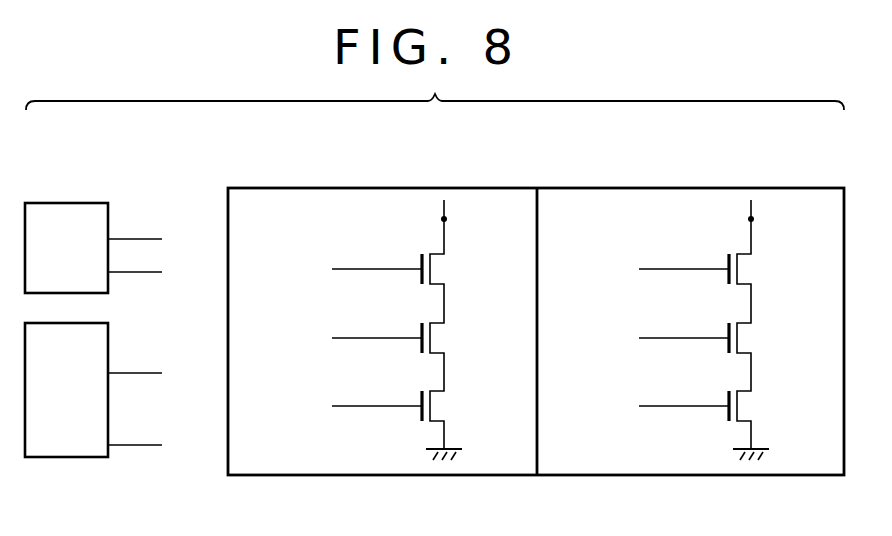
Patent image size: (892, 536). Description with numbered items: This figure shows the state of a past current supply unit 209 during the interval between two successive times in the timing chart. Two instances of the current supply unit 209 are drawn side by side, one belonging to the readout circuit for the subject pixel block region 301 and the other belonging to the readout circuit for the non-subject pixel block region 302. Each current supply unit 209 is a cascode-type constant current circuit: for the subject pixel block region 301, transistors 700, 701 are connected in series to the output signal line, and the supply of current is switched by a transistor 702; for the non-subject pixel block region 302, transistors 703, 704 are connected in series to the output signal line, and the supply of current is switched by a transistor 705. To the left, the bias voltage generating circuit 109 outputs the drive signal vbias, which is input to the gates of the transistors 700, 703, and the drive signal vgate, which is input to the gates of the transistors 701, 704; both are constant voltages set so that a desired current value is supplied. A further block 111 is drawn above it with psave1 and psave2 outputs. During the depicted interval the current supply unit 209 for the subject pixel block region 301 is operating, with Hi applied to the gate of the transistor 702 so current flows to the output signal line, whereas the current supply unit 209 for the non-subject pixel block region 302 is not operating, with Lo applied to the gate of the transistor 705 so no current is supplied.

The power save control unit 111 is at (70, 203).
The bias voltage generating circuit 109 is at (70, 457).
The current supply unit 209 is at (352, 188).
The subject pixel block region 301 is at (425, 297).
The non-subject pixel block region 302 is at (732, 297).
The transistor 700 is at (454, 408).
The transistor 701 is at (454, 340).
The transistor 702 is at (454, 271).
The transistor 703 is at (761, 408).
The transistor 704 is at (761, 340).
The transistor 705 is at (761, 271).